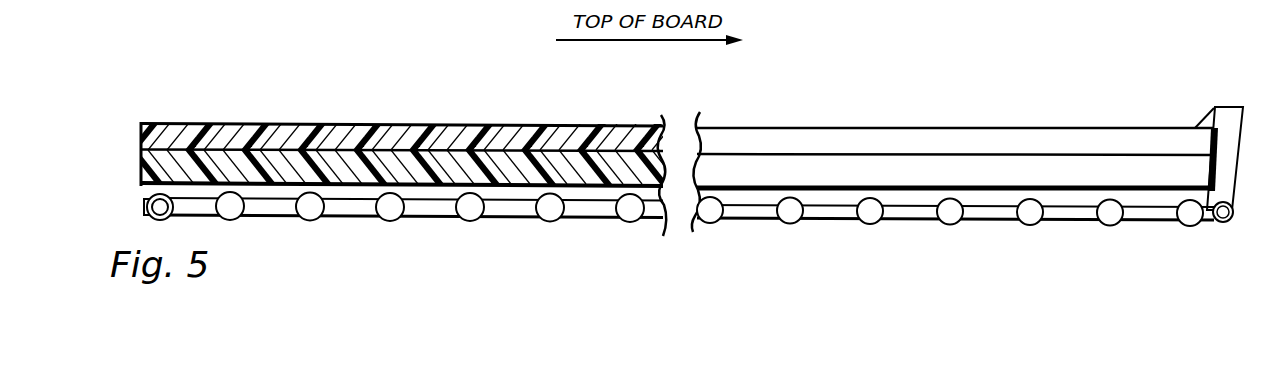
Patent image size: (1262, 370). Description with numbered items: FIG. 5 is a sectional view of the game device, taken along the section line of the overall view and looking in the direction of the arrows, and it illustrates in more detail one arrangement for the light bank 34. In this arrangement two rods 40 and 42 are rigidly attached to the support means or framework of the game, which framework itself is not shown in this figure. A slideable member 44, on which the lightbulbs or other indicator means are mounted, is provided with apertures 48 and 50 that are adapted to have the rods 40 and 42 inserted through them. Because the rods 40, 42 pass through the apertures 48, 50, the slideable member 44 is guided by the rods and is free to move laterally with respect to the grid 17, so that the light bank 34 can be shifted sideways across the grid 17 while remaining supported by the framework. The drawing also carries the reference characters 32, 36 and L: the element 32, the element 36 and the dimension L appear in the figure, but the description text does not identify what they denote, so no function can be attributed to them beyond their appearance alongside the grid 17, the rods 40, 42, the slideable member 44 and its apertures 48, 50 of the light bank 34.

The grid 17 is at (418, 147).
The board 32 is at (611, 125).
The light bank 34 is at (1019, 225).
The end bracket 36 is at (1213, 107).
The rod 40 is at (142, 204).
The rod 42 is at (1220, 221).
The slideable member 44 is at (592, 220).
The aperture 48 is at (140, 197).
The aperture 50 is at (1234, 212).
The roller spacing L is at (466, 222).